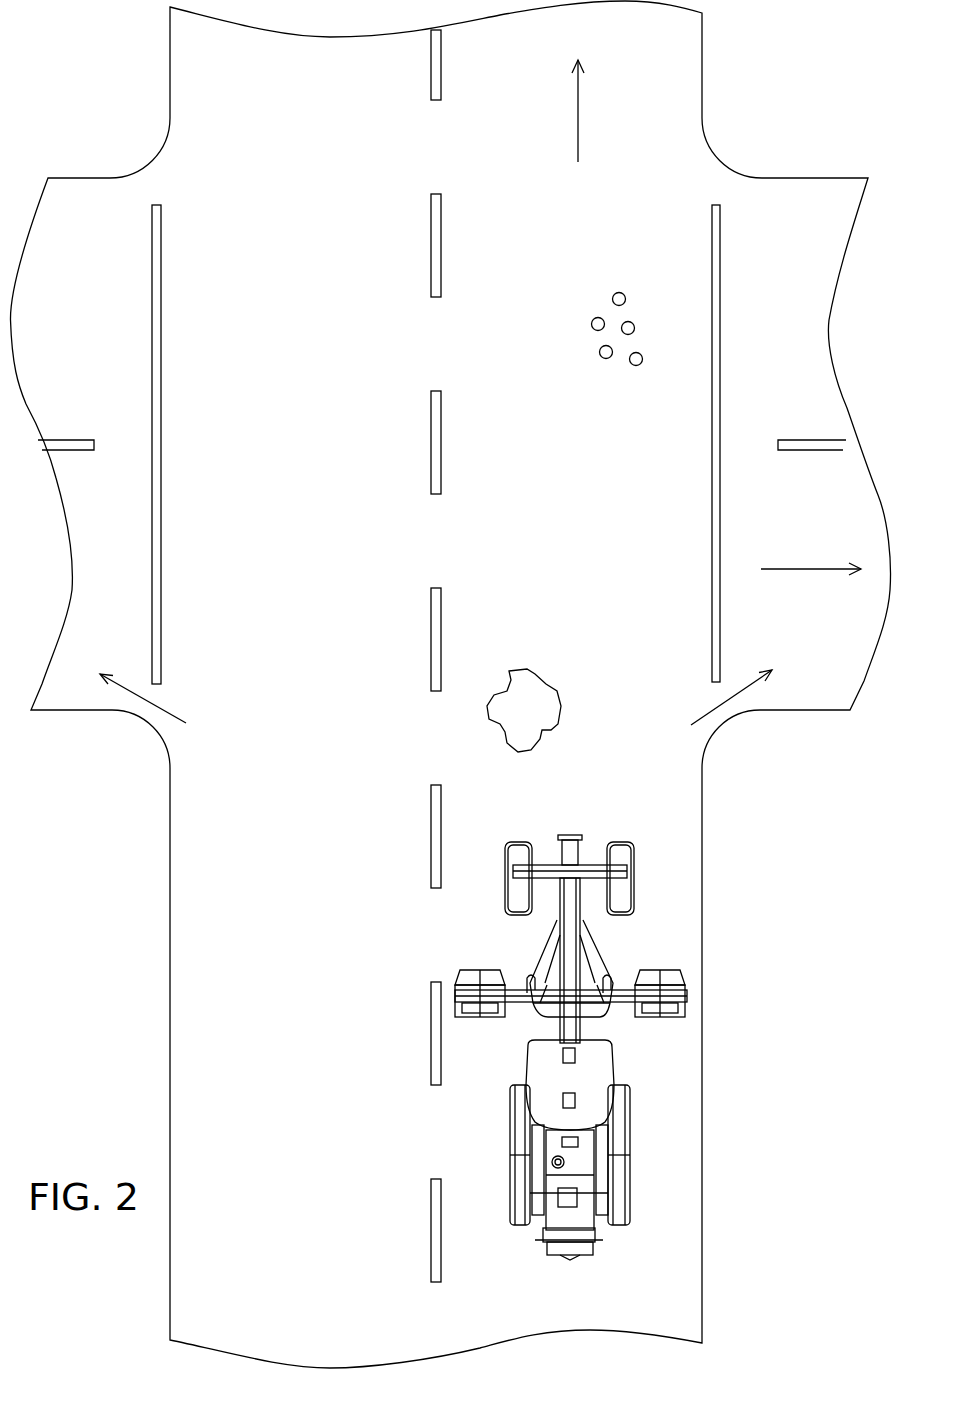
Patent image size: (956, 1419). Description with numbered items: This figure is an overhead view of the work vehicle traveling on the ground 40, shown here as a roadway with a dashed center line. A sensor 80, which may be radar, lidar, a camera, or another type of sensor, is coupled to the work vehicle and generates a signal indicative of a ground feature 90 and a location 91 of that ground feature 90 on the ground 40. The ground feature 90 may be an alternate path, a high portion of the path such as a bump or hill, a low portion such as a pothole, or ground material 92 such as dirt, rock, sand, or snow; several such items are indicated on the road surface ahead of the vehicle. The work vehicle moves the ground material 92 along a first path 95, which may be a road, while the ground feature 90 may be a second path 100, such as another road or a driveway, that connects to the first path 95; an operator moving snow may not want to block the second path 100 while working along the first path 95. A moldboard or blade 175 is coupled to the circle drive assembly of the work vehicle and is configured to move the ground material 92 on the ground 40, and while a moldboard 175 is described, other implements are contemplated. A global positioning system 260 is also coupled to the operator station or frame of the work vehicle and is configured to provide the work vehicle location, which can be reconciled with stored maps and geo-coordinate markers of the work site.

The ground 40 is at (533, 218).
The sensor 80 is at (576, 1056).
The ground feature 90 is at (570, 645).
The location of the ground feature 91 is at (541, 719).
The ground material 92 is at (635, 326).
The first path 95 is at (578, 110).
The second path 100 is at (782, 569).
The moldboard 175 is at (518, 997).
The global positioning system 260 is at (576, 1101).